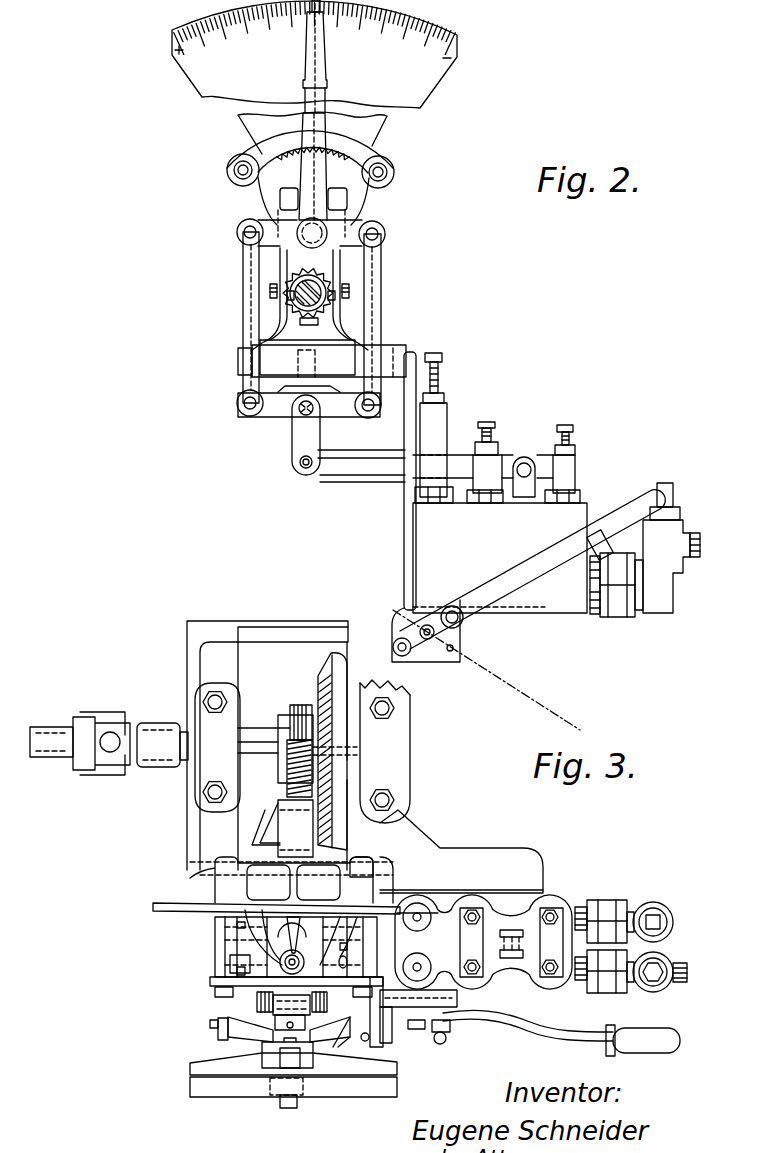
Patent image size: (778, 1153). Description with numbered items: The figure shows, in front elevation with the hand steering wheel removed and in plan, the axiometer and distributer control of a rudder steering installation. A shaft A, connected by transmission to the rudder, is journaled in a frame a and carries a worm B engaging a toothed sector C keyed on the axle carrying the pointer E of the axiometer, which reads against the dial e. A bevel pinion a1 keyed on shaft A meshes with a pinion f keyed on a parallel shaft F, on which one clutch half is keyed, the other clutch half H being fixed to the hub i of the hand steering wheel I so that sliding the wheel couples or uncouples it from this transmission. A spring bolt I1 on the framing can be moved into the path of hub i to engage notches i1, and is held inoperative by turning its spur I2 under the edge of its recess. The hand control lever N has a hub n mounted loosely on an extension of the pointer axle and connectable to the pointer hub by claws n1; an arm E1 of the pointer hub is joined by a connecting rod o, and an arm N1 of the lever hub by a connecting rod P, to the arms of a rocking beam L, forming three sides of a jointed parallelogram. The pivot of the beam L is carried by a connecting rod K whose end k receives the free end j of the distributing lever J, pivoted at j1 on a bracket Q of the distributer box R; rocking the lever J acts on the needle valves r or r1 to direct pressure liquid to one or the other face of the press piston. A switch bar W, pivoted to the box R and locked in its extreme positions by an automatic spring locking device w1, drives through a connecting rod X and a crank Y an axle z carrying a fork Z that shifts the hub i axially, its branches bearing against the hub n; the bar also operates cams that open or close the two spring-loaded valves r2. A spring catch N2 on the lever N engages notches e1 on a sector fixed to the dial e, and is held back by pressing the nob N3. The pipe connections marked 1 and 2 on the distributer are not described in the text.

In FIG. 2, the dial e is at (420, 96).
In FIG. 3, the dial e is at (178, 903).
In FIG. 2, the hand control lever N is at (327, 54).
In FIG. 2, the nob N3 is at (311, 12).
In FIG. 3, the nob N3 is at (279, 963).
In FIG. 2, the spring catch N2 is at (320, 145).
In FIG. 2, the hub of hand lever n is at (325, 219).
In FIG. 3, the hub of hand lever n is at (347, 1010).
In FIG. 2, the notches e1 is at (310, 174).
In FIG. 2, the arm of hand lever hub N1 is at (272, 222).
In FIG. 3, the arm of hand lever hub N1 is at (240, 965).
In FIG. 2, the arm of pointer hub E1 is at (385, 231).
In FIG. 3, the arm of pointer hub E1 is at (395, 877).
In FIG. 2, the frame a is at (256, 247).
In FIG. 3, the frame a is at (203, 818).
In FIG. 2, the connecting rod P is at (247, 265).
In FIG. 3, the connecting rod P is at (267, 945).
In FIG. 2, the fork Z is at (283, 262).
In FIG. 3, the fork Z is at (238, 1026).
In FIG. 2, the connecting rod o is at (328, 280).
In FIG. 3, the connecting rod o is at (338, 946).
In FIG. 2, the shaft F is at (300, 298).
In FIG. 2, the hub of hand steering wheel i is at (330, 278).
In FIG. 2, the notches i1 is at (288, 322).
In FIG. 2, the axle z is at (240, 360).
In FIG. 3, the axle z is at (216, 1028).
In FIG. 2, the crank Y is at (400, 353).
In FIG. 3, the crank Y is at (395, 1027).
In FIG. 2, the projection or spur I2 is at (303, 386).
In FIG. 2, the rocking beam L is at (344, 411).
In FIG. 3, the rocking beam L is at (332, 988).
In FIG. 2, the connecting rod K is at (300, 440).
In FIG. 2, the spring bolt I1 is at (298, 414).
In FIG. 2, the end of connecting rod k is at (303, 464).
In FIG. 2, the lever J is at (377, 467).
In FIG. 3, the lever J is at (443, 940).
In FIG. 2, the free end of lever j is at (318, 474).
In FIG. 2, the connecting rod X is at (405, 570).
In FIG. 2, the box of distributer R is at (437, 540).
In FIG. 2, the bracket Q is at (534, 475).
In FIG. 3, the bracket Q is at (507, 928).
In FIG. 2, the pivot j1 is at (523, 462).
In FIG. 3, the pivot j1 is at (515, 963).
In FIG. 2, the switch bar W is at (641, 503).
In FIG. 3, the switch bar W is at (648, 1044).
In FIG. 2, the union nut 2 is at (619, 565).
In FIG. 3, the union nut 2 is at (617, 913).
In FIG. 2, the pipe connection 1 is at (692, 528).
In FIG. 3, the pipe connection 1 is at (682, 990).
In FIG. 2, the automatic spring locking device w1 is at (468, 622).
In FIG. 3, the automatic spring locking device w1 is at (450, 1040).
In FIG. 3, the shaft A is at (185, 730).
In FIG. 3, the bevel pinion a1 is at (340, 669).
In FIG. 3, the worm B is at (297, 705).
In FIG. 3, the toothed sector C is at (290, 747).
In FIG. 3, the pinion f is at (270, 827).
In FIG. 3, the pointer E is at (285, 915).
In FIG. 3, the claws n1 is at (262, 947).
In FIG. 3, the clutch half H is at (259, 1005).
In FIG. 3, the hand steering wheel I is at (227, 1085).
In FIG. 3, the spring-loaded valves r2 is at (418, 965).
In FIG. 3, the needle valve r is at (477, 917).
In FIG. 3, the needle valve r1 is at (553, 915).